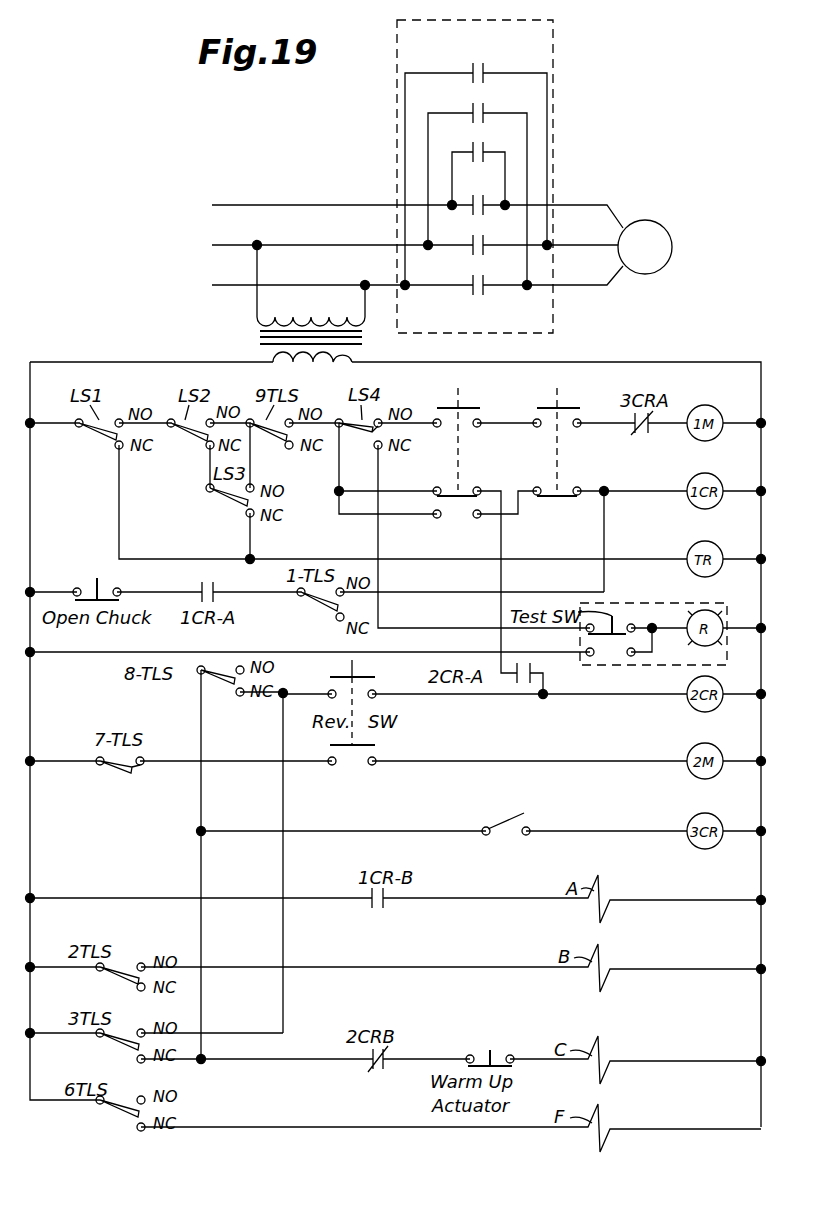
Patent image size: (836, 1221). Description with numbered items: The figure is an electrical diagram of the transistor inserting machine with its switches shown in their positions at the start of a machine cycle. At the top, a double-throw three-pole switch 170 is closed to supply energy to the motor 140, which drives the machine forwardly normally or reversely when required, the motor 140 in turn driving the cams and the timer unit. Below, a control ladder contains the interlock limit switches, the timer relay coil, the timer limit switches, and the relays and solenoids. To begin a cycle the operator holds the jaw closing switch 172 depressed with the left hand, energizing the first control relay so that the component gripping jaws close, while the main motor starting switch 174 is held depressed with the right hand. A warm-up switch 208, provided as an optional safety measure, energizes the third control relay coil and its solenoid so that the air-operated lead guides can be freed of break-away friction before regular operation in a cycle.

The double-throw 3-pole switch 170 is at (397, 152).
The motor 140 is at (664, 228).
The jaw closing switch 172 is at (458, 404).
The main motor starting switch 174 is at (557, 404).
The warm-up switch 208 is at (506, 817).